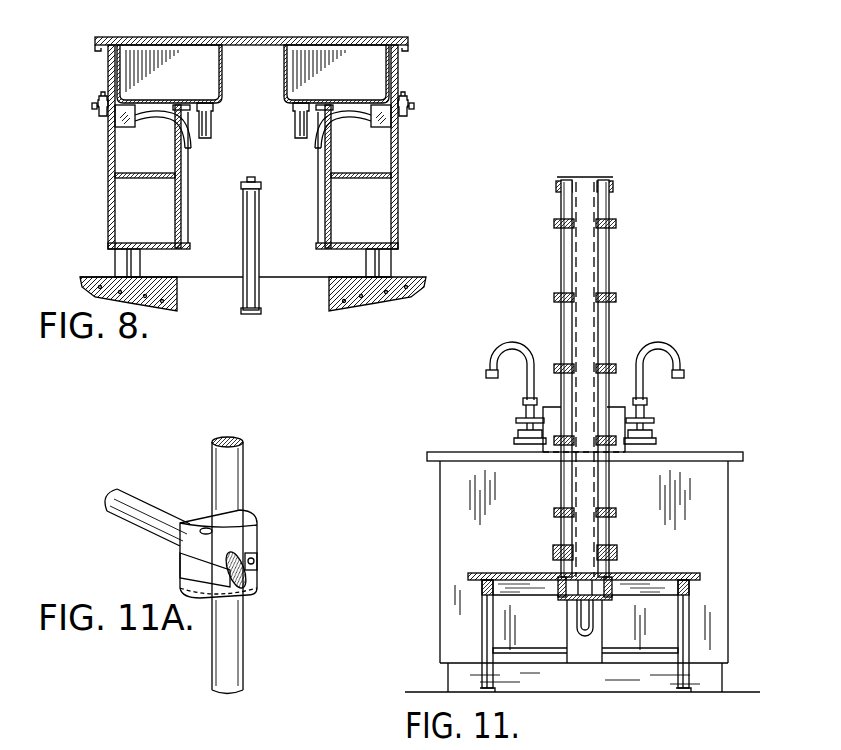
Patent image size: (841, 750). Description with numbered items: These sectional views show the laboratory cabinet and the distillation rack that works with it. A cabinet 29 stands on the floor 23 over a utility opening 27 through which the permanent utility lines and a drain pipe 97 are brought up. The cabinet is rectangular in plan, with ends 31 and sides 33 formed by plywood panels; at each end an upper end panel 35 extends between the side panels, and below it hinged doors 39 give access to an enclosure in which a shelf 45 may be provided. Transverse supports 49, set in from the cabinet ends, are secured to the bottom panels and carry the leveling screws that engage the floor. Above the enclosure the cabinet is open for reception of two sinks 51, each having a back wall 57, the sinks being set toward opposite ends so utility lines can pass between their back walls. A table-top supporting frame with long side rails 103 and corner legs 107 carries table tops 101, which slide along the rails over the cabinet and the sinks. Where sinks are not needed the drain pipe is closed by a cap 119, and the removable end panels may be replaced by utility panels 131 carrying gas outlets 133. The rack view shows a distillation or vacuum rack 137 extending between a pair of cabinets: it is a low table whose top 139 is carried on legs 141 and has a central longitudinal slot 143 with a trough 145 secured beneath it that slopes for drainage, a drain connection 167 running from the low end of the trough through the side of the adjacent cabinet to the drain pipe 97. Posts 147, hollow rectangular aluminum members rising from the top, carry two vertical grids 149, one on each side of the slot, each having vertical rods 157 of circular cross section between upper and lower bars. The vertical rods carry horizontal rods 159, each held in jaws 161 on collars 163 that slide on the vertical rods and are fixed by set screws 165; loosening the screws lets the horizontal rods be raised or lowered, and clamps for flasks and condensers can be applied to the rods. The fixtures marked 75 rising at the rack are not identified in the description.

In FIG. 8, the floor 23 is at (392, 284).
In FIG. 11, the floor 23 is at (425, 688).
In FIG. 8, the utility opening 27 is at (174, 292).
In FIG. 8, the cabinet 29 is at (102, 211).
In FIG. 11, the cabinet 29 is at (740, 484).
In FIG. 11, the cabinet ends 31 is at (432, 491).
In FIG. 11, the cabinet sides 33 is at (453, 528).
In FIG. 8, the upper end panel 35 is at (108, 72).
In FIG. 8, the hinged doors 39 is at (108, 187).
In FIG. 8, the shelf 45 is at (157, 176).
In FIG. 8, the transverse supports 49 is at (137, 262).
In FIG. 8, the sink 51 is at (278, 101).
In FIG. 8, the sink back wall 57 is at (223, 68).
In FIG. 11, the faucet 75 is at (497, 354).
In FIG. 8, the drain pipe 97 is at (260, 241).
In FIG. 8, the table top 101 is at (407, 42).
In FIG. 11, the table top 101 is at (450, 452).
In FIG. 8, the side rails 103 is at (97, 48).
In FIG. 8, the legs 107 is at (118, 262).
In FIG. 8, the cap 119 is at (242, 174).
In FIG. 8, the utility panel 131 is at (119, 127).
In FIG. 8, the gas outlets 133 is at (92, 106).
In FIG. 11, the rack 137 is at (620, 168).
In FIG. 11, the rack top 139 is at (467, 573).
In FIG. 11, the rack legs 141 is at (482, 627).
In FIG. 11, the central longitudinal slot 143 is at (568, 575).
In FIG. 11, the trough 145 is at (563, 602).
In FIG. 11, the posts 147 is at (585, 315).
In FIG. 11, the vertical grid 149 is at (555, 266).
In FIG. 11A, the vertical rods 157 is at (233, 463).
In FIG. 11, the vertical rods 157 is at (562, 317).
In FIG. 11A, the horizontal rods 159 is at (154, 513).
In FIG. 11, the horizontal rods 159 is at (555, 223).
In FIG. 11A, the jaws 161 is at (185, 570).
In FIG. 11A, the collars 163 is at (253, 590).
In FIG. 11, the collars 163 is at (558, 219).
In FIG. 11A, the set screw 165 is at (252, 555).
In FIG. 11, the drain connection 167 is at (577, 627).